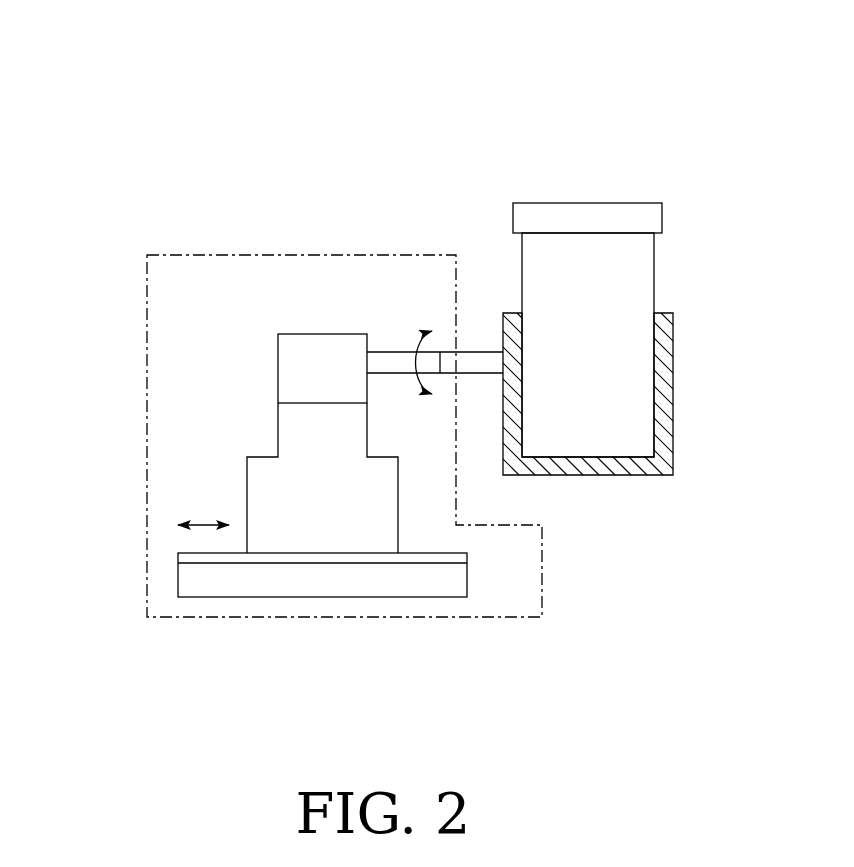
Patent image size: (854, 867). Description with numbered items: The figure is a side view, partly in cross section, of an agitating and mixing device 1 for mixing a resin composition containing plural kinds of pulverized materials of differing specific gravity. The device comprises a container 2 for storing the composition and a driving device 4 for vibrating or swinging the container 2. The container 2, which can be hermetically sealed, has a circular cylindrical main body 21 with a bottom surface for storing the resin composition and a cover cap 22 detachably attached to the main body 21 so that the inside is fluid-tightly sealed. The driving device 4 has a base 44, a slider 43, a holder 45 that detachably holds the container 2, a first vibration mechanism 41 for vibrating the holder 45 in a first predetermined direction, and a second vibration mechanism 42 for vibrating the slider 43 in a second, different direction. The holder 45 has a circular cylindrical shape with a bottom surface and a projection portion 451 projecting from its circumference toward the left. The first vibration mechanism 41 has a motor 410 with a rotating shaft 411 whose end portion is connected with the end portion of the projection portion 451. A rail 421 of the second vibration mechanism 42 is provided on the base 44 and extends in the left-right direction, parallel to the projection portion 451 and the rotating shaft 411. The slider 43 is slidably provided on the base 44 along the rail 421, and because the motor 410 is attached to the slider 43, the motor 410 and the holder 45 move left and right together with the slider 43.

The agitating and mixing device 1 is at (640, 108).
The container 2 is at (657, 262).
The main body 21 is at (605, 297).
The cover cap 22 is at (618, 220).
The driving device 4 is at (172, 236).
The first vibration mechanism 41 is at (317, 331).
The motor 410 is at (297, 357).
The rotating shaft 411 is at (383, 362).
The second vibration mechanism 42 is at (333, 567).
The rail 421 is at (422, 558).
The slider 43 is at (270, 485).
The base 44 is at (278, 583).
The holder 45 is at (660, 375).
The projection portion 451 is at (480, 362).